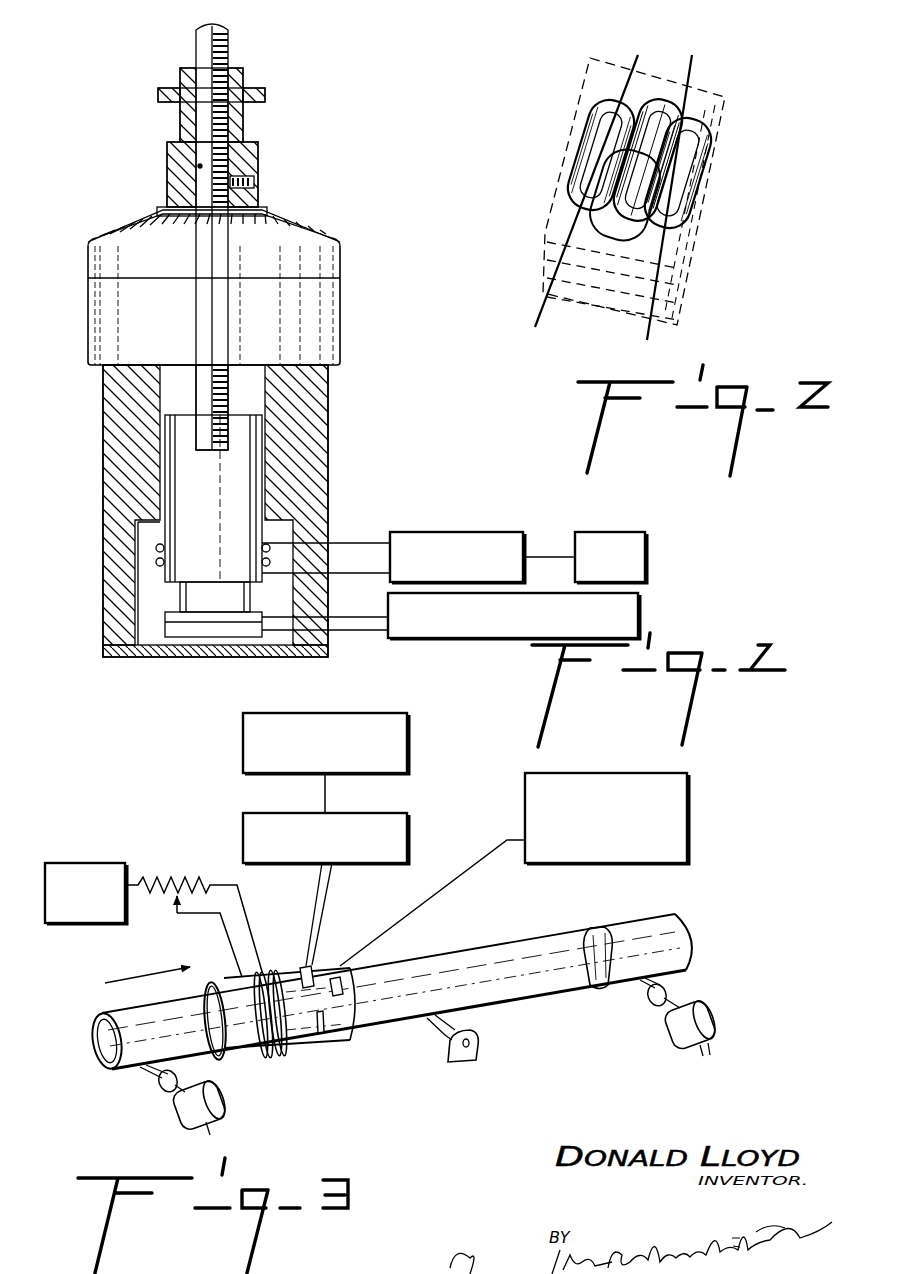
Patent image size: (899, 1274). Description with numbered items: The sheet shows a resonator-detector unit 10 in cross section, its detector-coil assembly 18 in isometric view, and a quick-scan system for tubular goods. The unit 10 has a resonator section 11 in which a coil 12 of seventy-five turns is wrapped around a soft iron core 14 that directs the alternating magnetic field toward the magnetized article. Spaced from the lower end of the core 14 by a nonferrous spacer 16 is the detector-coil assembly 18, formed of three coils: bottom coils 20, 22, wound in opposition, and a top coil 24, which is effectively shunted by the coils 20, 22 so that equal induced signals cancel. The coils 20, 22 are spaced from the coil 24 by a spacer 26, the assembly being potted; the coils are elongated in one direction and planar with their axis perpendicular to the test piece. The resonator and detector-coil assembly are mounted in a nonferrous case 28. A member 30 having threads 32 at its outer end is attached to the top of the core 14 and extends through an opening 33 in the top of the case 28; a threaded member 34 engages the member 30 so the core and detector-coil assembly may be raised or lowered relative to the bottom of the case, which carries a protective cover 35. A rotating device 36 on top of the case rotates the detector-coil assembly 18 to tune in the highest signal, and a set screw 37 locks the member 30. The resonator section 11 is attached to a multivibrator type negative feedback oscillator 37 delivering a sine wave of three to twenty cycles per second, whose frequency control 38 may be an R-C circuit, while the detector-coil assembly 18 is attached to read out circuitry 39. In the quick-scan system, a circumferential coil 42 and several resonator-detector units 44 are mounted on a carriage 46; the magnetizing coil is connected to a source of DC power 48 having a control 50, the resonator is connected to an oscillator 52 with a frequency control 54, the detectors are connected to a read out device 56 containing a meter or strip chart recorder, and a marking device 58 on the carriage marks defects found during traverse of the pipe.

In FIG. 1, the resonator-detector unit 10 is at (90, 213).
In FIG. 1, the resonator section 11 is at (150, 543).
In FIG. 1, the coil 12 is at (266, 553).
In FIG. 1, the soft iron core 14 is at (175, 485).
In FIG. 1, the nonferrous spacer 16 is at (178, 596).
In FIG. 1, the detector-coil assembly 18 is at (178, 640).
In FIG. 2, the detector-coil assembly 18 is at (710, 293).
In FIG. 2, the bottom coil 20 is at (578, 104).
In FIG. 2, the bottom coil 22 is at (703, 135).
In FIG. 2, the top coil 24 is at (655, 78).
In FIG. 2, the spacer 26 is at (545, 262).
In FIG. 1, the case 28 is at (88, 316).
In FIG. 1, the member 30 is at (202, 380).
In FIG. 1, the threads 32 is at (229, 52).
In FIG. 1, the opening 33 is at (199, 165).
In FIG. 1, the threaded member 34 is at (266, 95).
In FIG. 1, the cover 35 is at (262, 655).
In FIG. 1, the rotating device 36 is at (259, 152).
In FIG. 1, the oscillator 37 is at (255, 182).
In FIG. 1, the frequency control 38 is at (646, 558).
In FIG. 1, the read out circuitry 39 is at (645, 612).
In FIG. 3, the circumferential coil 42 is at (281, 1045).
In FIG. 3, the resonator-detector units 44 is at (312, 966).
In FIG. 3, the carriage 46 is at (241, 1067).
In FIG. 3, the source of DC power 48 is at (75, 924).
In FIG. 3, the control 50 is at (195, 878).
In FIG. 3, the oscillator 52 is at (408, 838).
In FIG. 3, the frequency control 54 is at (408, 745).
In FIG. 3, the read out device 56 is at (687, 845).
In FIG. 3, the marking device 58 is at (353, 972).